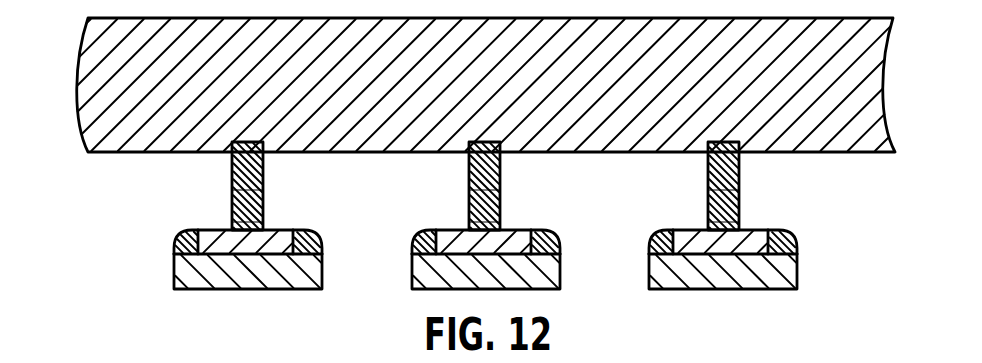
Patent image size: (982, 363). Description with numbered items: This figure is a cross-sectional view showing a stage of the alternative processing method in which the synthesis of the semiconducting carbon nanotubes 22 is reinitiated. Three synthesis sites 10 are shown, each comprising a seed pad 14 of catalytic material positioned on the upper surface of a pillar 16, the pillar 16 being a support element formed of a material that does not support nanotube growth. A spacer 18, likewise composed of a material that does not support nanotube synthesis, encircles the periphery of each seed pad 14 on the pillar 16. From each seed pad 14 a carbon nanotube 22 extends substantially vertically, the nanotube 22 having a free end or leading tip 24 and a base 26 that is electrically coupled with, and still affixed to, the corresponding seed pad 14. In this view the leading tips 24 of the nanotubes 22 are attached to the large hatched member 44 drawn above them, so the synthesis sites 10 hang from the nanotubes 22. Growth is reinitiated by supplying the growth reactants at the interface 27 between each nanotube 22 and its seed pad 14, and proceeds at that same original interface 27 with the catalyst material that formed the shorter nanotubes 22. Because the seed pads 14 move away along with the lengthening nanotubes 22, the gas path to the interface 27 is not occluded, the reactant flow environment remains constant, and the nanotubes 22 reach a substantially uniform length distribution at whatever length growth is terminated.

The synthesis site 10 is at (459, 259).
The seed pad 14 is at (485, 216).
The pillar 16 is at (506, 271).
The spacer 18 is at (500, 232).
The carbon nanotube 22 is at (506, 132).
The leading tip 24 is at (477, 168).
The base 26 is at (504, 206).
The interface 27 is at (508, 192).
The support substrate 44 is at (79, 92).